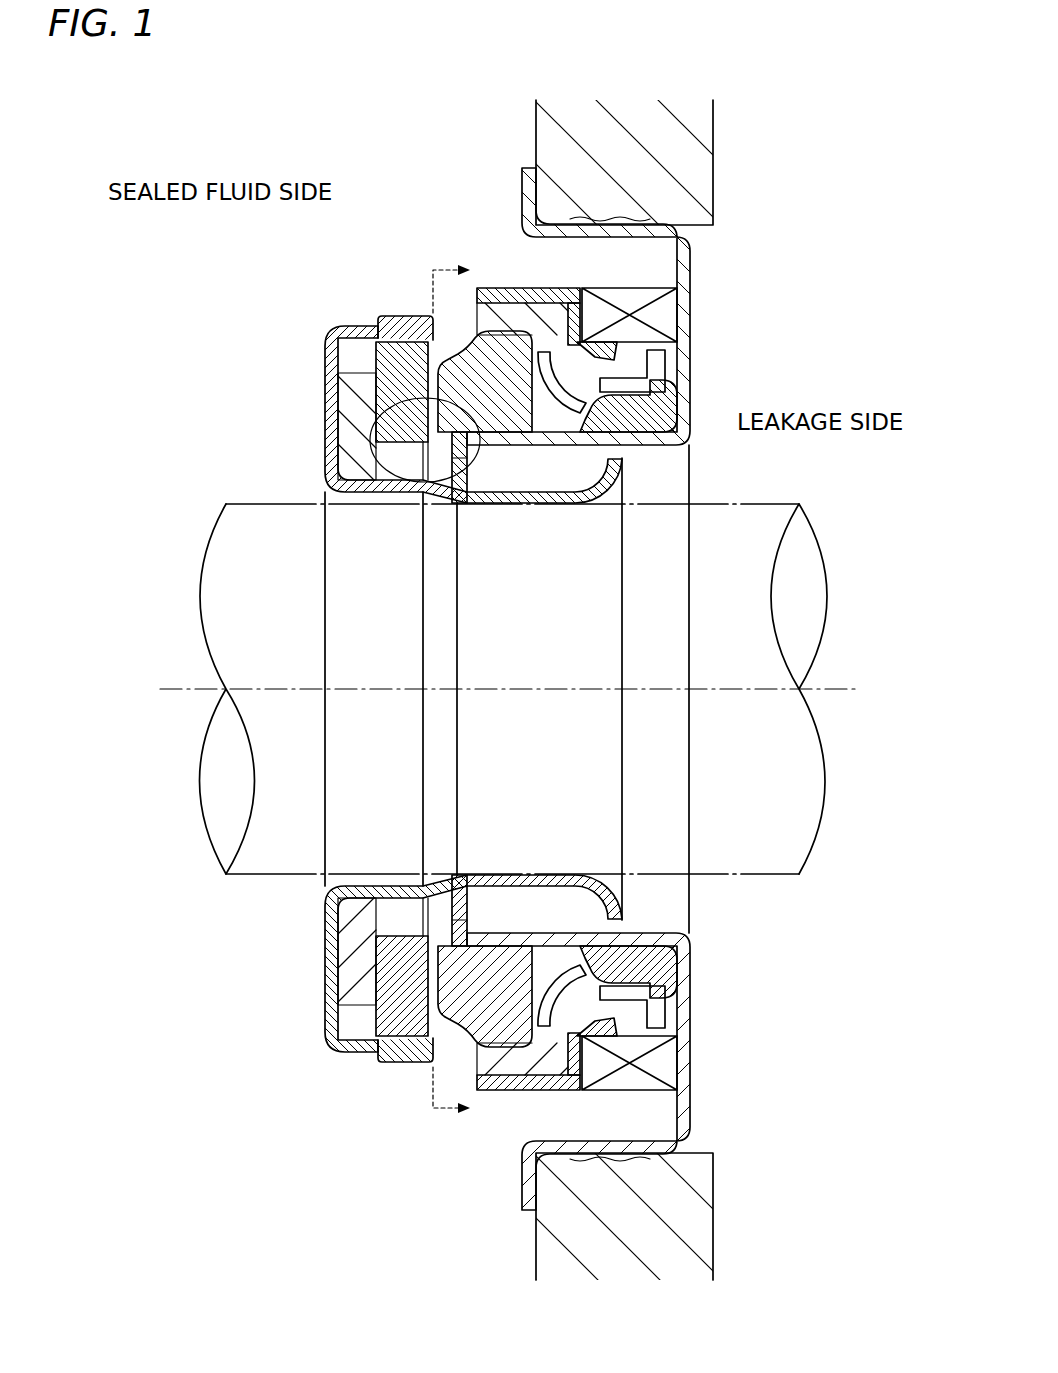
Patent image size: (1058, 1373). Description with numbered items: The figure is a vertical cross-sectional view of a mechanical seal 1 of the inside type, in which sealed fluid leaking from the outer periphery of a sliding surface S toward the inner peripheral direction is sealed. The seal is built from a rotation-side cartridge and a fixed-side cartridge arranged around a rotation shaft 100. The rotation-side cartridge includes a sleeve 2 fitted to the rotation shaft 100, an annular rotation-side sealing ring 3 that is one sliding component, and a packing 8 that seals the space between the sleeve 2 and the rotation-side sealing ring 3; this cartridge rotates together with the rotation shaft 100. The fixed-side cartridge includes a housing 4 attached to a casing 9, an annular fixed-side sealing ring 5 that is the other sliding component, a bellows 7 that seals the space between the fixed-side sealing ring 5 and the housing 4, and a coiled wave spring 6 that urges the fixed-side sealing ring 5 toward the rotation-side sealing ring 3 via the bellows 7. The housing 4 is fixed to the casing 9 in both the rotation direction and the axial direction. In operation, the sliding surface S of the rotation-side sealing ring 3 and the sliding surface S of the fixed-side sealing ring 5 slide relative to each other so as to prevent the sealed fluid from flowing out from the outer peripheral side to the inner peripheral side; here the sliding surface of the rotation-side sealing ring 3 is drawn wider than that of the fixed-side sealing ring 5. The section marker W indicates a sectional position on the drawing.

The mechanical seal 1 is at (198, 340).
The sleeve 2 is at (331, 402).
The rotation-side sealing ring 3 is at (370, 353).
The housing 4 is at (690, 262).
The fixed-side sealing ring 5 is at (503, 462).
The coiled wave spring 6 is at (668, 317).
The bellows 7 is at (497, 300).
The packing 8 is at (360, 440).
The casing 9 is at (560, 138).
The rotation shaft 100 is at (279, 876).
The sliding surface S is at (407, 490).
The section line W is at (448, 694).